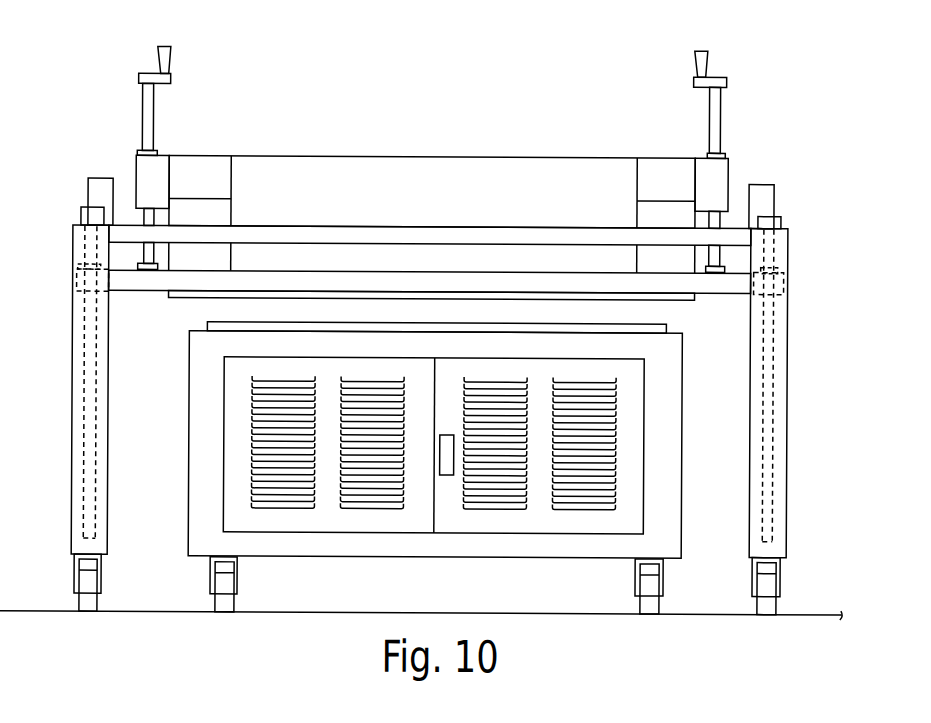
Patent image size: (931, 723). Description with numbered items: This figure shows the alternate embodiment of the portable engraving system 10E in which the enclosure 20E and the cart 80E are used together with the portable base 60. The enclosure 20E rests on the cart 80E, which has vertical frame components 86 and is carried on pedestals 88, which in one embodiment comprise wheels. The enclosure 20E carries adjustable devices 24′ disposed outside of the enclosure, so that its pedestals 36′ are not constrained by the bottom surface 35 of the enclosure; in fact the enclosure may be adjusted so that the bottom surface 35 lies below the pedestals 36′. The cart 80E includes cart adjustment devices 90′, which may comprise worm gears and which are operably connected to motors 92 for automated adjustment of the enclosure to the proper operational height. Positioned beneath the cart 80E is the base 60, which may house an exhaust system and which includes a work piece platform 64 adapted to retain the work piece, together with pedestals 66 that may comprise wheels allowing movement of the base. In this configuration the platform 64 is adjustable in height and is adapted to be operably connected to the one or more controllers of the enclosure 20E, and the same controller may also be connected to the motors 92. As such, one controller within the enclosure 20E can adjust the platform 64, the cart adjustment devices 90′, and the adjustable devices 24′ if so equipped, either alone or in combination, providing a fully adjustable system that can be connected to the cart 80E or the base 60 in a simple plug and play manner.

The portable engraving system 10E is at (391, 144).
The enclosure 20E is at (257, 156).
The adjustable devices 24′ is at (155, 74).
The bottom surface 35 is at (684, 300).
The pedestals 36′ is at (148, 264).
The portable base 60 is at (186, 398).
The work piece platform 64 is at (229, 319).
The pedestals 66 is at (228, 598).
The cart 80E is at (789, 507).
The vertical frame components 86 is at (786, 403).
The pedestals 88 is at (92, 598).
The cart adjustment devices 90′ is at (77, 282).
The motors 92 is at (87, 190).